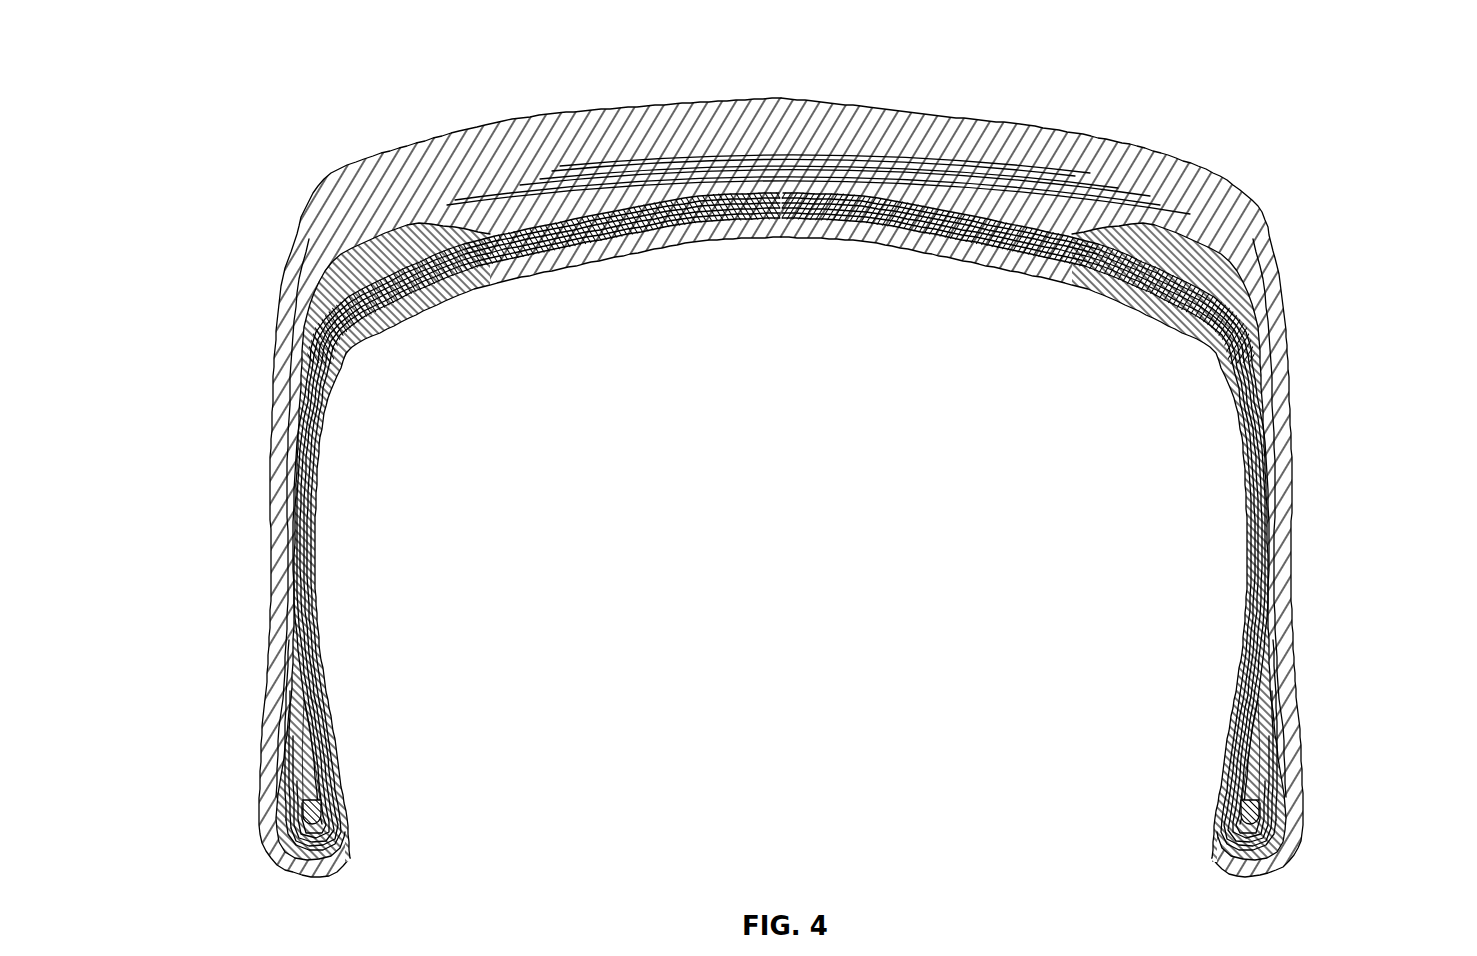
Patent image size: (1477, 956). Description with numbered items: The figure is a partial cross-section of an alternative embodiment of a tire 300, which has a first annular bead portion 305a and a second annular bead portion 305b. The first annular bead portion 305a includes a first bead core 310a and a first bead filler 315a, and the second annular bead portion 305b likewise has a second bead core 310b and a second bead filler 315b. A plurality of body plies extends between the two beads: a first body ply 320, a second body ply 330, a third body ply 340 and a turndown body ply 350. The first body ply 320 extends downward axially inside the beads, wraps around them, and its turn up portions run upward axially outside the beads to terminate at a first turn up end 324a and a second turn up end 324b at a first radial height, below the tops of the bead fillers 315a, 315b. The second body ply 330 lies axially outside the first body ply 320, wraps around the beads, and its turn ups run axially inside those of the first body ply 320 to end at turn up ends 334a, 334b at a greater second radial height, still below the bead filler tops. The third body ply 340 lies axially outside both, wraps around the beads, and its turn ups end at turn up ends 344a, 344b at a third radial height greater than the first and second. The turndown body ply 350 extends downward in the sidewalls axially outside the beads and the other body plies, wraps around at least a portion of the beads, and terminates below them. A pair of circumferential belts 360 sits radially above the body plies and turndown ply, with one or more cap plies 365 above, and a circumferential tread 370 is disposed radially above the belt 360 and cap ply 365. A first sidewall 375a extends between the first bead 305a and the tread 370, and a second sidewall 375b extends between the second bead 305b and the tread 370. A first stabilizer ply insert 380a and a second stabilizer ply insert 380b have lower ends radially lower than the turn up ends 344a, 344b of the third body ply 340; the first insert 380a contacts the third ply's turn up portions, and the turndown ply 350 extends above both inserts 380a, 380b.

The tire 300 is at (738, 478).
The first annular bead portion 305a is at (1288, 774).
The second annular bead portion 305b is at (265, 774).
The first bead core 310a is at (1252, 815).
The second bead core 310b is at (313, 813).
The first bead filler 315a is at (1248, 762).
The second bead filler 315b is at (313, 777).
The first body ply 320 is at (1020, 243).
The first turn up end 324a is at (1262, 720).
The second turn up end 324b is at (288, 761).
The second body ply 330 is at (1073, 257).
The first turn up end 334a is at (1250, 733).
The second turn up end 334b is at (296, 723).
The third body ply 340 is at (1137, 257).
The first turn up end 344a is at (1260, 340).
The second turn up end 344b is at (318, 305).
The turndown body ply 350 is at (1263, 307).
The circumferential belt 360 is at (1107, 197).
The cap ply 365 is at (1013, 170).
The circumferential tread 370 is at (870, 112).
The first sidewall 375a is at (1335, 445).
The second sidewall 375b is at (228, 438).
The first stabilizer ply insert 380a is at (1203, 267).
The second stabilizer ply insert 380b is at (358, 265).